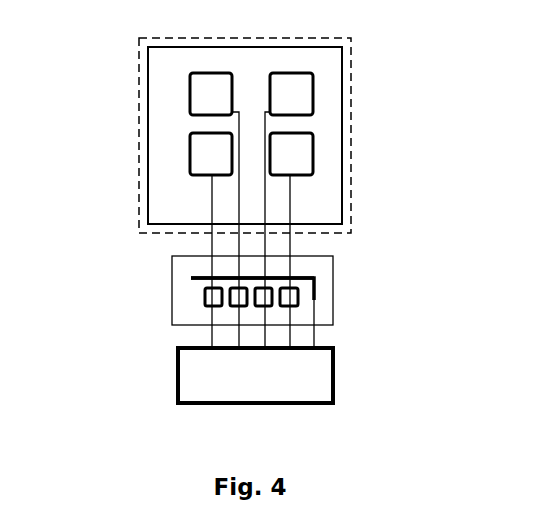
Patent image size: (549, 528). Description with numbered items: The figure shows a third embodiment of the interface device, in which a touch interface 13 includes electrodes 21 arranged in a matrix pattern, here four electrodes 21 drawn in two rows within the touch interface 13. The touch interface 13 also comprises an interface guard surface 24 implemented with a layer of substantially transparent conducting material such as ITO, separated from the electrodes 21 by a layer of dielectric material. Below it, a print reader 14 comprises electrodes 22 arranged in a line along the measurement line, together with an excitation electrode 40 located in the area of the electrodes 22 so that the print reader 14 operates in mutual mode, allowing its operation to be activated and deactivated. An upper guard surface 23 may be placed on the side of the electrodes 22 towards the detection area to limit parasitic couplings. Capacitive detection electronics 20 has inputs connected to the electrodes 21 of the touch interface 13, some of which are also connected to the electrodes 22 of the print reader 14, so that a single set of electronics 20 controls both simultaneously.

The touch interface 13 is at (138, 137).
The electrodes 21 is at (313, 90).
The interface guard surface 24 is at (342, 137).
The print reader 14 is at (169, 295).
The excitation electrode 40 is at (190, 278).
The electrodes 22 is at (300, 293).
The upper guard surface 23 is at (322, 300).
The capacitive detection electronics 20 is at (333, 375).